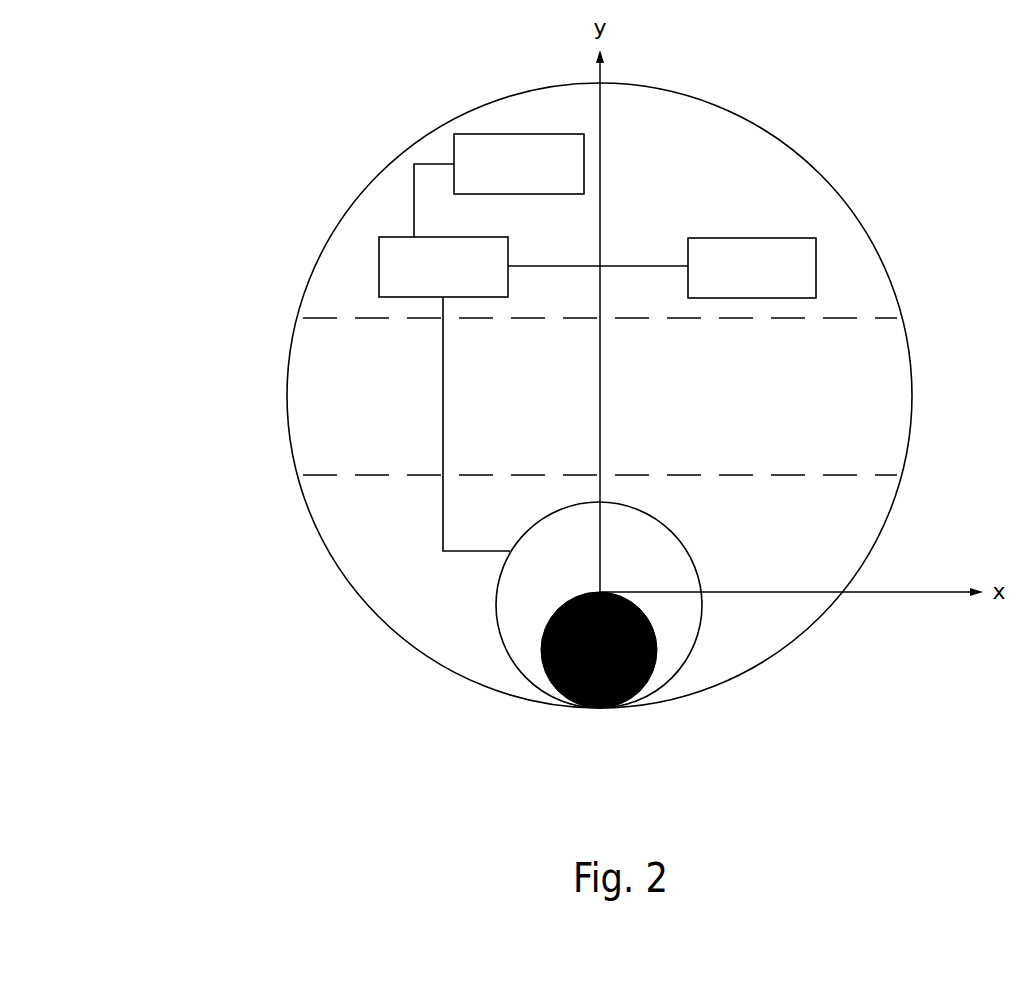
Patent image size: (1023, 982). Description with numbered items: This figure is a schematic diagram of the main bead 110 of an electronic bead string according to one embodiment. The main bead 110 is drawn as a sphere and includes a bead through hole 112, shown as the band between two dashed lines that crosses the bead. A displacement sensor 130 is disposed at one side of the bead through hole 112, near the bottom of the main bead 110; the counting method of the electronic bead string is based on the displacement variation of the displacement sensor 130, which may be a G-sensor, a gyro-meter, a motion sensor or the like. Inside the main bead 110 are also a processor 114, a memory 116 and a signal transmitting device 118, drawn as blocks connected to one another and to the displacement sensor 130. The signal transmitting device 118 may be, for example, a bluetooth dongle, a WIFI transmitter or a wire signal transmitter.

The main bead 110 is at (836, 188).
The bead through hole 112 is at (287, 393).
The processor 114 is at (464, 282).
The memory 116 is at (773, 283).
The signal transmitting device 118 is at (542, 178).
The displacement sensor 130 is at (702, 618).